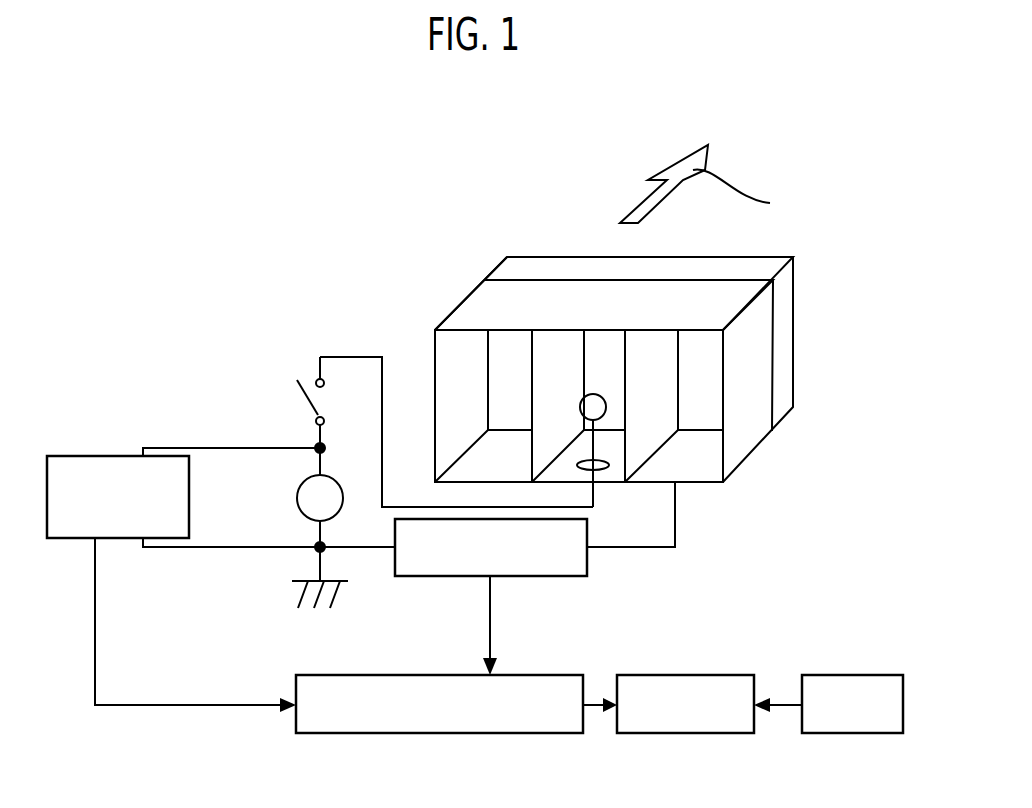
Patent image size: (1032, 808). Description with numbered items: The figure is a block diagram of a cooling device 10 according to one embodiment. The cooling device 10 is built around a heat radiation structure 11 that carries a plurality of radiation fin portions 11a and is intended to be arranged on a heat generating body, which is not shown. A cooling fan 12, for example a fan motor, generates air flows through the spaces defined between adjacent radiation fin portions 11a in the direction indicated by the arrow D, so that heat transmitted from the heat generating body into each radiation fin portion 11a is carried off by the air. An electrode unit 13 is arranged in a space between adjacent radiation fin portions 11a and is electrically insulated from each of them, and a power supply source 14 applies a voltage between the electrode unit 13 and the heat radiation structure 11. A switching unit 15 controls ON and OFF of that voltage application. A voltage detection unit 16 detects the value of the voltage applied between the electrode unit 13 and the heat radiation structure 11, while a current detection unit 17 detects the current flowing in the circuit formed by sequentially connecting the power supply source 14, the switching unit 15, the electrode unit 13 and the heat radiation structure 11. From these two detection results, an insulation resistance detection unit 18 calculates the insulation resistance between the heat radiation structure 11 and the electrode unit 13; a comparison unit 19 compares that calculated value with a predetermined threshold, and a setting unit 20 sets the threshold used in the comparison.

The cooling device 10 is at (188, 234).
The heat radiation structure 11 is at (456, 296).
The radiation fin portions 11a is at (463, 355).
The cooling fan 12 is at (495, 258).
The electrode unit 13 is at (606, 440).
The power supply source 14 is at (300, 516).
The switching unit 15 is at (300, 396).
The voltage detection unit 16 is at (82, 455).
The current detection unit 17 is at (433, 577).
The insulation resistance detection unit 18 is at (553, 675).
The comparison unit 19 is at (715, 675).
The setting unit 20 is at (868, 675).